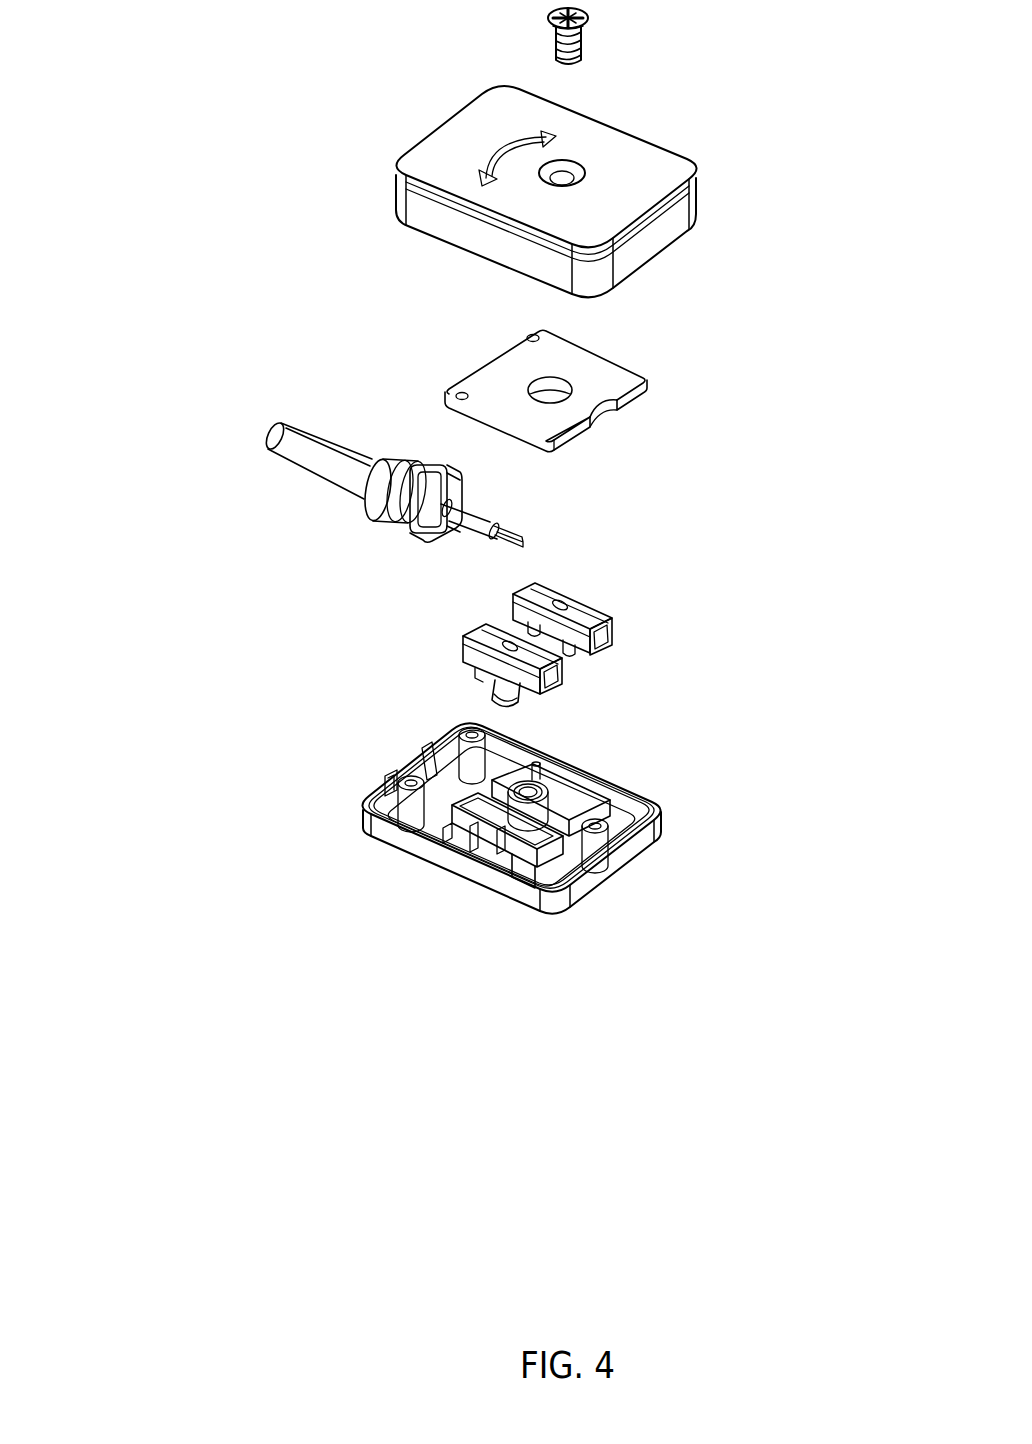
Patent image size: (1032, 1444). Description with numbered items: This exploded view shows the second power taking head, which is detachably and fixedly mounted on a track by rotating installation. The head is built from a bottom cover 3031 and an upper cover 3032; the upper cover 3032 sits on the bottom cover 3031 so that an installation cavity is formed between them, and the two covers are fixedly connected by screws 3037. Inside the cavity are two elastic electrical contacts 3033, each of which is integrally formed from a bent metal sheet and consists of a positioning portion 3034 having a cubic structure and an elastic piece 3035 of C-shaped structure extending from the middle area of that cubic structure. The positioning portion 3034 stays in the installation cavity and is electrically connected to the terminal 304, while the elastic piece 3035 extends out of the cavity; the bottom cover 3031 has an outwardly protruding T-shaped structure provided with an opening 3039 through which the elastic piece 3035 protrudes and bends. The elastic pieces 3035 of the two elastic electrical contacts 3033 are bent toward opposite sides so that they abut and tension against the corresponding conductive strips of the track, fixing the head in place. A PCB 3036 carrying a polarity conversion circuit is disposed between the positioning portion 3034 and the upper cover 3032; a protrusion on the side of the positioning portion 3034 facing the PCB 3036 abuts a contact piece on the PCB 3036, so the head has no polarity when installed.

The screws 3037 is at (580, 43).
The upper cover 3032 is at (627, 173).
The PCB 3036 is at (598, 390).
The terminal 304 is at (320, 458).
The elastic electrical contact 3033 is at (686, 656).
The positioning portion 3034 is at (603, 614).
The elastic piece 3035 is at (517, 707).
The bottom cover 3031 is at (558, 818).
The opening 3039 is at (463, 867).